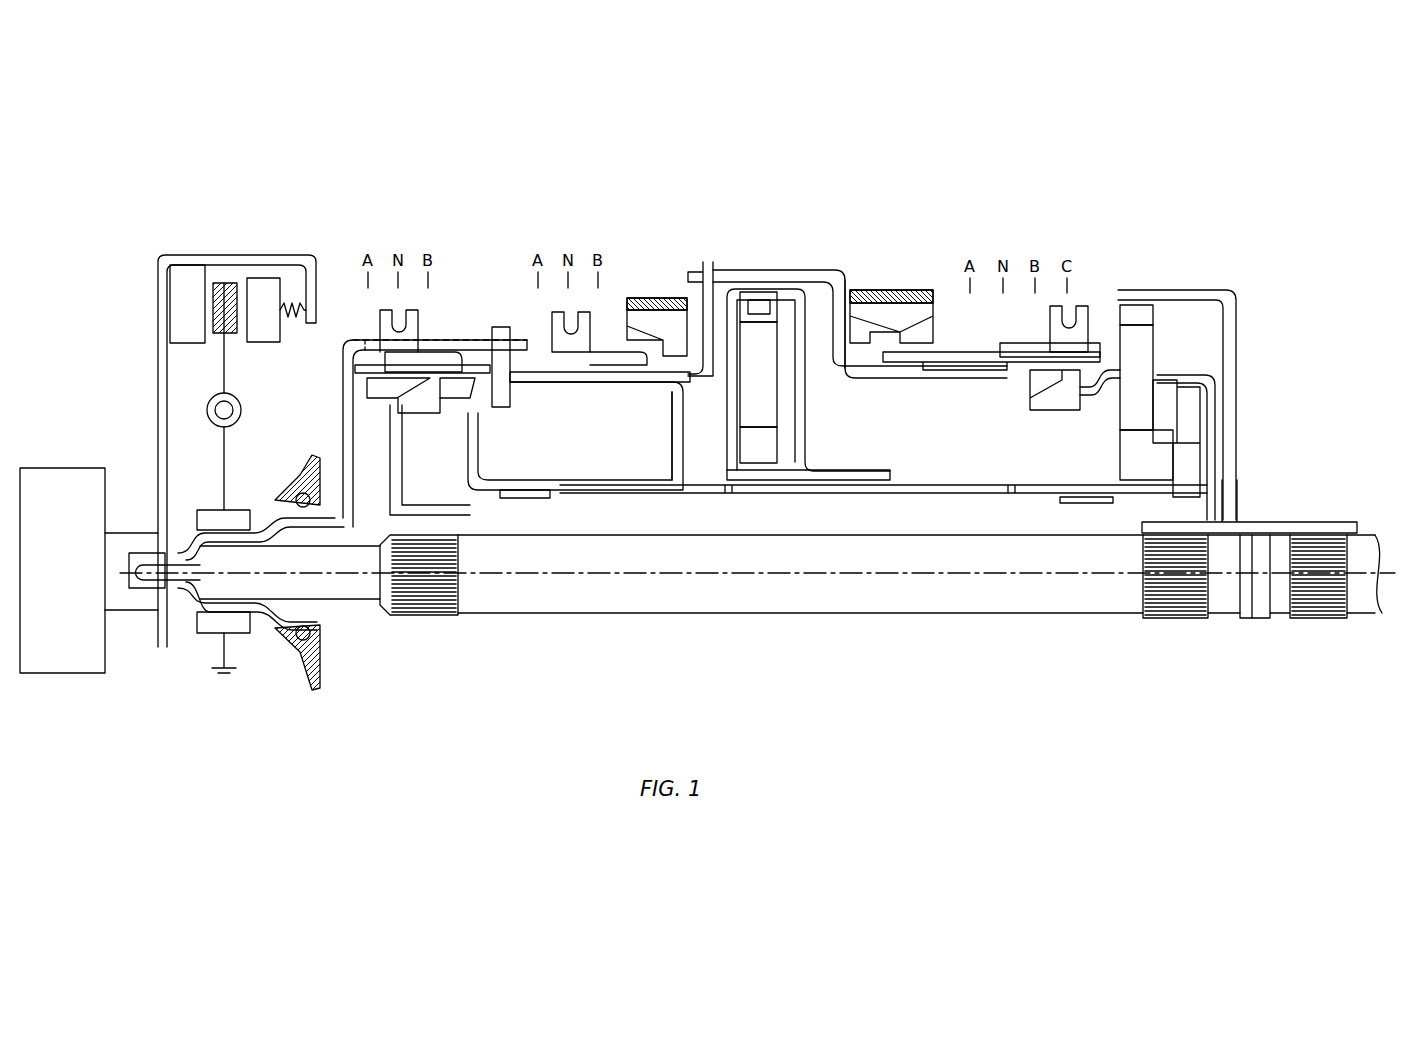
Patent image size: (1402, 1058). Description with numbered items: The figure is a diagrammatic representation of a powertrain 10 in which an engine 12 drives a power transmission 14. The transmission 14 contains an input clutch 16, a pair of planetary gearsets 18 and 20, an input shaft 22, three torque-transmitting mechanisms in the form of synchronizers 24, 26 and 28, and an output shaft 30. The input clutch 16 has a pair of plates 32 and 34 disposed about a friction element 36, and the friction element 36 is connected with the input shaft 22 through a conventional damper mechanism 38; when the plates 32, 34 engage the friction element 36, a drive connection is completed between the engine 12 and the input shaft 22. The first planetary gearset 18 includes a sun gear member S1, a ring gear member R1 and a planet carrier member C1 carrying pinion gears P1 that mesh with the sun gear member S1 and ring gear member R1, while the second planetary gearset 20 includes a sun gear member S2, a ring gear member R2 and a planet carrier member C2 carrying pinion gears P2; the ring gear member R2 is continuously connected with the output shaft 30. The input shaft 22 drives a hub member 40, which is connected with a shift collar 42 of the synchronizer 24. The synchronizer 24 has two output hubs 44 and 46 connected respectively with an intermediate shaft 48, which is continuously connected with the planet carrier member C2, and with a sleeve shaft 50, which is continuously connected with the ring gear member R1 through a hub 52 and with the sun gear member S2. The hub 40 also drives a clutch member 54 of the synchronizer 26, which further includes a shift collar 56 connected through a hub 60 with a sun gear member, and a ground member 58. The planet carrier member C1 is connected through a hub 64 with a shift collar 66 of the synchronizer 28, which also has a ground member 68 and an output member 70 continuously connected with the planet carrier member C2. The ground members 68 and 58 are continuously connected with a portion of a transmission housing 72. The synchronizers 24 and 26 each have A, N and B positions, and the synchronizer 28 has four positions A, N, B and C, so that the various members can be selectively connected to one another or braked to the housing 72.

The powertrain 10 is at (120, 280).
The engine 12 is at (86, 462).
The power transmission 14 is at (736, 226).
The input clutch 16 is at (242, 252).
The planetary gearset 18 is at (786, 264).
The planetary gearset 20 is at (1177, 290).
The input shaft 22 is at (258, 630).
The synchronizer 24 is at (424, 302).
The synchronizer 26 is at (603, 306).
The synchronizer 28 is at (942, 299).
The output shaft 30 is at (1357, 525).
The plate 32 is at (188, 344).
The plate 34 is at (268, 343).
The friction element 36 is at (228, 283).
The damper mechanism 38 is at (242, 408).
The hub member 40 is at (342, 432).
The shift collar 42 is at (420, 322).
The output hub 44 is at (403, 420).
The output hub 46 is at (432, 405).
The intermediate shaft 48 is at (585, 603).
The sleeve shaft 50 is at (590, 482).
The hub 52 is at (810, 419).
The clutch member 54 is at (560, 398).
The shift collar 56 is at (552, 322).
The ground member 58 is at (622, 300).
The hub 60 is at (672, 422).
The hub 64 is at (841, 286).
The shift collar 66 is at (1083, 314).
The ground member 68 is at (930, 316).
The output member 70 is at (1035, 392).
The transmission housing 72 is at (672, 297).
The planet carrier member C1 is at (708, 326).
The ring gear member R1 is at (770, 301).
The pinion gears P1 is at (760, 379).
The sun gear member S1 is at (770, 451).
The ring gear member R2 is at (1148, 306).
The pinion gears P2 is at (1148, 354).
The planet carrier member C2 is at (1178, 374).
The sun gear member S2 is at (1125, 458).